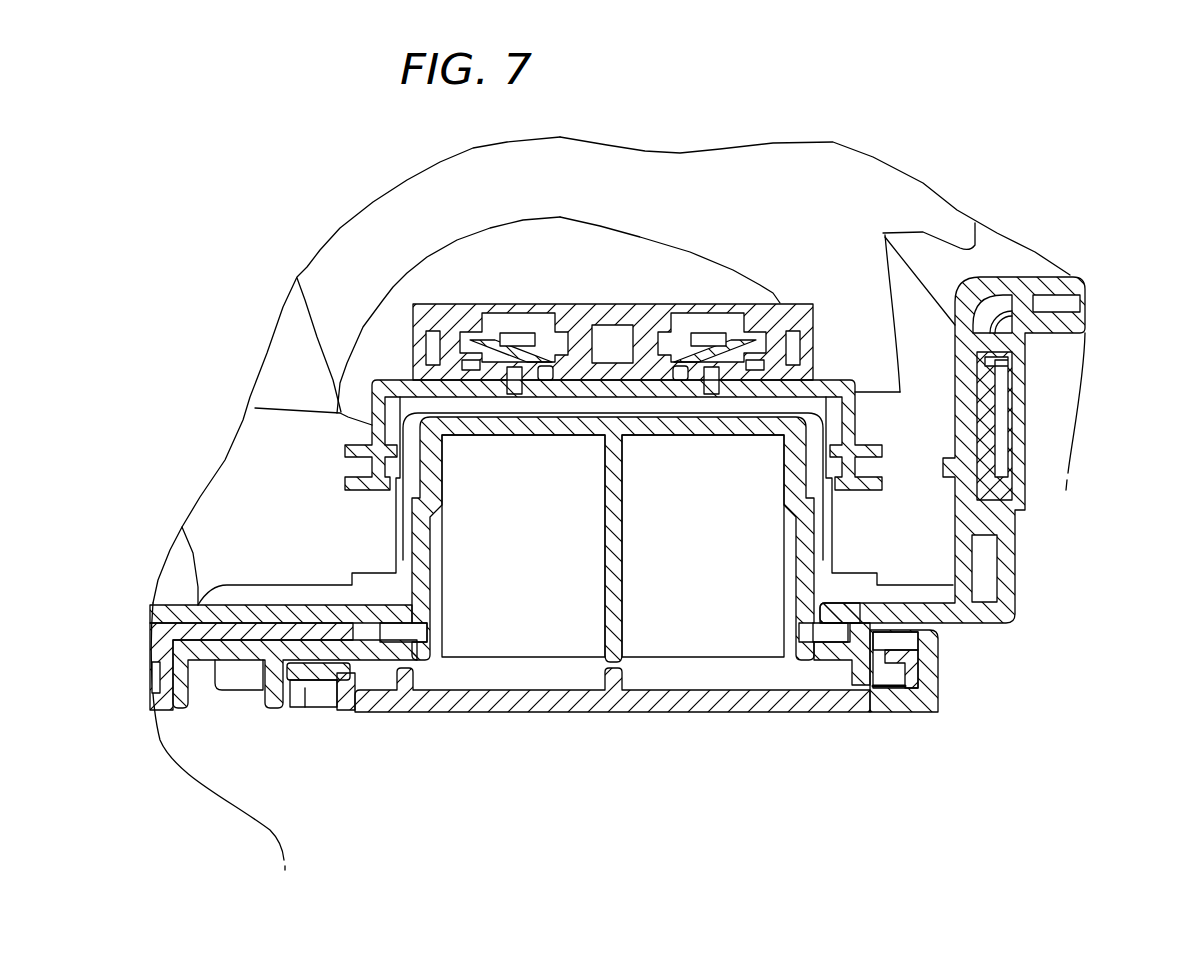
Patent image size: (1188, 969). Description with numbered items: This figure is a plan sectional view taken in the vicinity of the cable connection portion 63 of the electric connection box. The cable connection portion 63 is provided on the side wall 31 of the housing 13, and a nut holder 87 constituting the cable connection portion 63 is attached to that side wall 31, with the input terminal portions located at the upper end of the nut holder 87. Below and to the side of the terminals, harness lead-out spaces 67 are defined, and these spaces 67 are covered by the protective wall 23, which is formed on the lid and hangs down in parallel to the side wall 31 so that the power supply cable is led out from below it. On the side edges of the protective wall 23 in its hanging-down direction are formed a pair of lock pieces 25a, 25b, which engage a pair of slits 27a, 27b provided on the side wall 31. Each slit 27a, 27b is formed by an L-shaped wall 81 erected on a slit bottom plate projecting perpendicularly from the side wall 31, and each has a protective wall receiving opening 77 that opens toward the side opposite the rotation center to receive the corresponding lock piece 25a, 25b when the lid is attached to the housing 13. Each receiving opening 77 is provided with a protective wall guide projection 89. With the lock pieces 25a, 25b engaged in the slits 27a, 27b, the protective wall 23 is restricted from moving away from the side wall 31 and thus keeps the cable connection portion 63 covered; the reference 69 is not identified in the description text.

The housing 13 is at (1015, 572).
The protective wall 23 is at (557, 714).
The lock piece 25a is at (320, 620).
The lock piece 25b is at (920, 612).
The slit 27a is at (286, 710).
The slit 27b is at (930, 655).
The side wall 31 is at (222, 690).
The cable connection portion 63 is at (675, 628).
The harness lead-out space 67 is at (525, 545).
The engagement window 69 is at (317, 702).
The protective wall receiving opening 77 is at (349, 705).
The L-shaped wall 81 is at (265, 680).
The nut holder 87 is at (557, 432).
The protective wall guide projection 89 is at (300, 702).